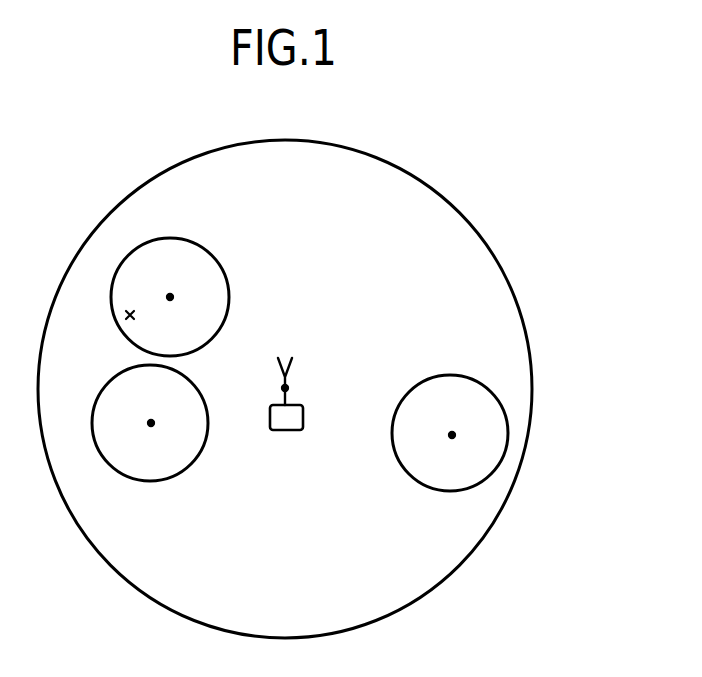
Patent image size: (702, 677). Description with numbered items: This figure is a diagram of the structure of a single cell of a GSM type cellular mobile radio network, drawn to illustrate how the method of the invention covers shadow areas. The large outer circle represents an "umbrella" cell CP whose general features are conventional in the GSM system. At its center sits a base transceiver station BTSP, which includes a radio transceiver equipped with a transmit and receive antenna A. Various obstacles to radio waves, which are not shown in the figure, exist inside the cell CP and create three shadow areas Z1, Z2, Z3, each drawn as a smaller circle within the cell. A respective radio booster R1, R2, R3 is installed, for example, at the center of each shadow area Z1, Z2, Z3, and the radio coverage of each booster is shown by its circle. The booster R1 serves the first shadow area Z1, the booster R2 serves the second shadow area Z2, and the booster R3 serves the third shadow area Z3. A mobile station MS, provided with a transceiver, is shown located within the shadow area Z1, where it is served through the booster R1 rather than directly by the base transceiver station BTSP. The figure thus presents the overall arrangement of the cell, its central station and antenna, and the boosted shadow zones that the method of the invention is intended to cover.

The umbrella cell CP is at (533, 262).
The shadow area Z1 is at (224, 246).
The shadow area Z2 is at (160, 494).
The shadow area Z3 is at (411, 493).
The radio booster R1 is at (170, 297).
The radio booster R2 is at (151, 423).
The radio booster R3 is at (452, 435).
The mobile station MS is at (130, 315).
The transmit and receive antenna A is at (285, 388).
The base transceiver station BTSP is at (259, 406).